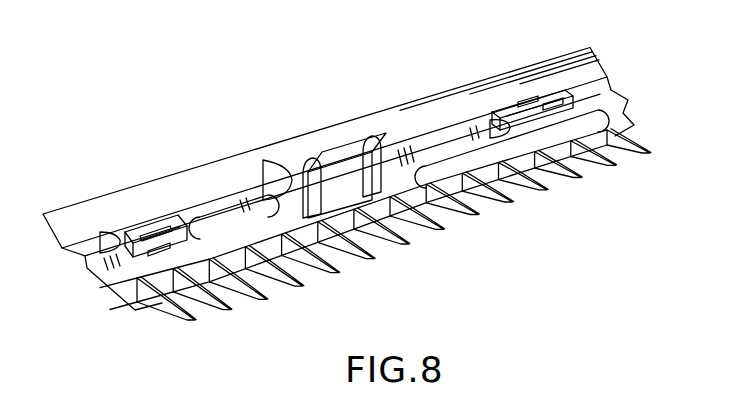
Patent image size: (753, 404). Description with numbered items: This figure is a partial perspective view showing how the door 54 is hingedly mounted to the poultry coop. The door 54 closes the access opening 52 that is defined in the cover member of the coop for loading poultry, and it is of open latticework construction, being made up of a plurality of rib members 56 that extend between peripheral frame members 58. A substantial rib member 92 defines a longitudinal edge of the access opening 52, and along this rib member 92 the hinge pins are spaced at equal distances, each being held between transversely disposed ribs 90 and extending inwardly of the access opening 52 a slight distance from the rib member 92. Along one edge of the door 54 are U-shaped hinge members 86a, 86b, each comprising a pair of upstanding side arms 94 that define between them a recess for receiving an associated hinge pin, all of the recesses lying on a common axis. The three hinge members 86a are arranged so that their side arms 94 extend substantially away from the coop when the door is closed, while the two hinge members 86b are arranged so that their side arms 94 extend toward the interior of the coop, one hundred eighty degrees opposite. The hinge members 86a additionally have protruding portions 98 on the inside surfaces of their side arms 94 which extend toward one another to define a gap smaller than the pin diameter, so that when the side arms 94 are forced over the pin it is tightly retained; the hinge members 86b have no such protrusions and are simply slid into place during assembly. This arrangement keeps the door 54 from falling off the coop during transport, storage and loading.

The access opening 52 is at (216, 210).
The door 54 is at (108, 278).
The rib members 56 is at (222, 305).
The peripheral frame members 58 is at (187, 263).
The U-shaped hinge members 86a is at (148, 236).
The U-shaped hinge members 86b is at (338, 168).
The transversely disposed ribs 90 is at (66, 240).
The rib member 92 is at (385, 128).
The side arms 94 is at (272, 225).
The protruding portions 98 is at (118, 232).